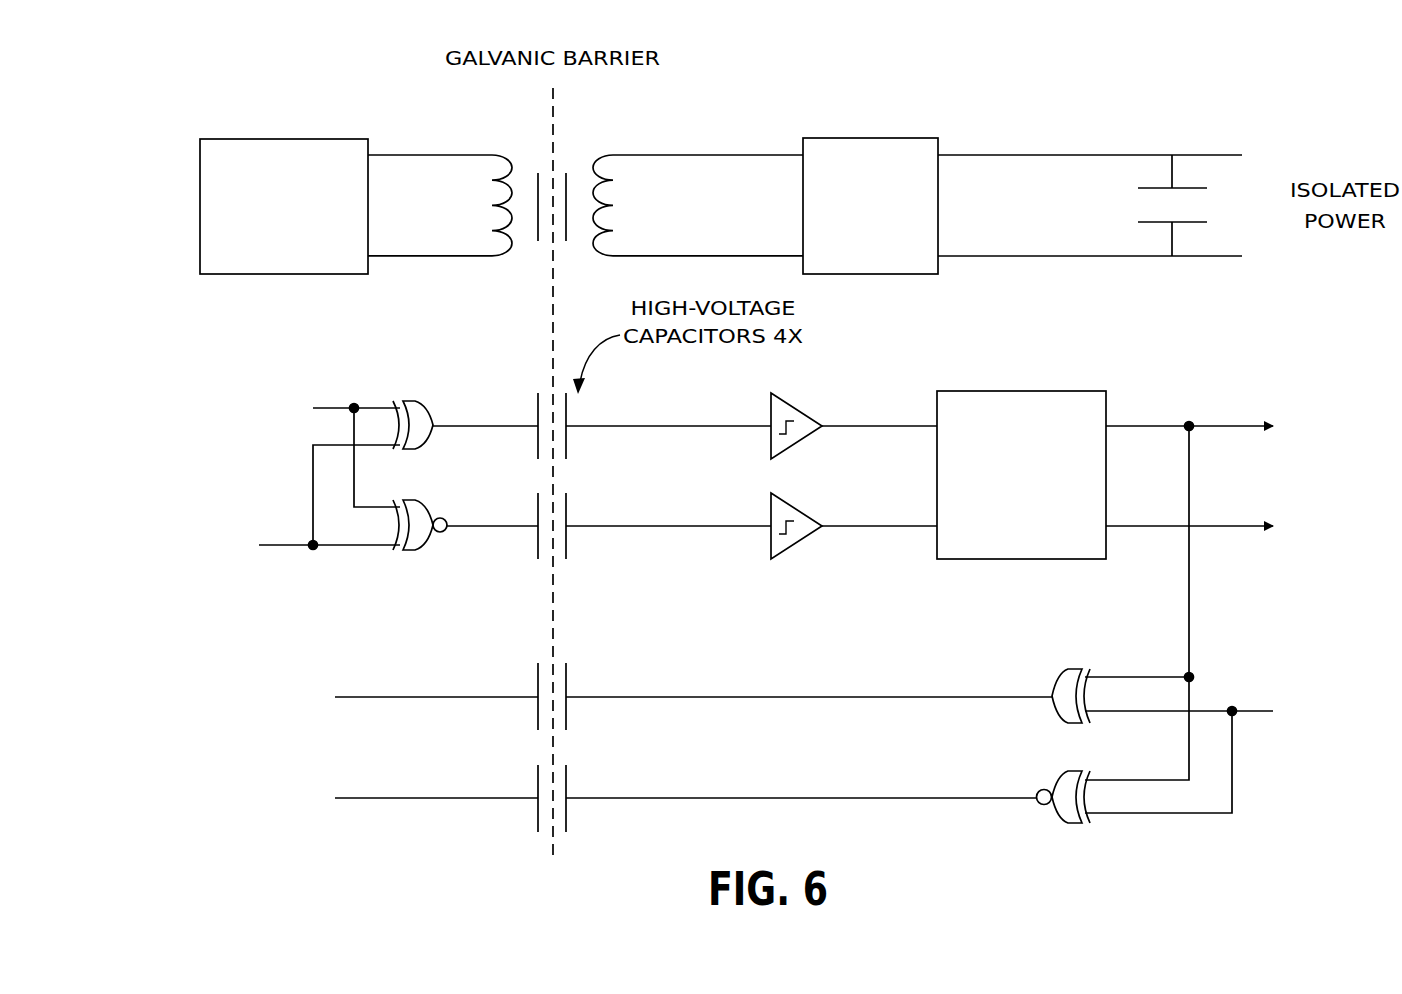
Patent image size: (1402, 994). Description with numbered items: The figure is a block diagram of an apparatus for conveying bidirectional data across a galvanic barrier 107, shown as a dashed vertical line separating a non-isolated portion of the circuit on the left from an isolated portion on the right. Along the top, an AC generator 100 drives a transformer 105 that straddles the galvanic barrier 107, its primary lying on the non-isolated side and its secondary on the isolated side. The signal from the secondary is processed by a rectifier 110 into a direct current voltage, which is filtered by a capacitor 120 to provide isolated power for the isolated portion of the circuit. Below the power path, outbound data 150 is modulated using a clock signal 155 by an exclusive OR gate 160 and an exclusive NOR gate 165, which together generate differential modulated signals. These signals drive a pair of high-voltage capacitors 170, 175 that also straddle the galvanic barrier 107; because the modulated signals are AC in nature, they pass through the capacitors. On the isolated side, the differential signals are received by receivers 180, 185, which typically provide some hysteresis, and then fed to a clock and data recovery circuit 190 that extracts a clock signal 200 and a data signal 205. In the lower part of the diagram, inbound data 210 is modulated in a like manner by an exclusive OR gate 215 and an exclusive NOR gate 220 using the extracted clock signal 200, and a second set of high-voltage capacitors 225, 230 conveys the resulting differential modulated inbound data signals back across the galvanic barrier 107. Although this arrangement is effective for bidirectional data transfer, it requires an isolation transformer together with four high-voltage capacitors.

The AC generator 100 is at (285, 137).
The transformer 105 is at (575, 158).
The galvanic barrier 107 is at (551, 97).
The rectifier 110 is at (868, 137).
The capacitor 120 is at (1186, 187).
The outbound data 150 is at (287, 549).
The clock signal 155 is at (334, 405).
The exclusive OR gate 160 is at (419, 400).
The exclusive NOR gate 165 is at (420, 553).
The high-voltage capacitor 170 is at (568, 450).
The high-voltage capacitor 175 is at (568, 550).
The receiver 180 is at (803, 440).
The receiver 185 is at (803, 540).
The clock and data recovery circuit 190 is at (1018, 390).
The clock signal 200 is at (1225, 423).
The data signal 205 is at (1228, 528).
The inbound data 210 is at (1254, 709).
The exclusive OR gate 215 is at (1069, 670).
The exclusive NOR gate 220 is at (1069, 824).
The high-voltage capacitor 225 is at (568, 721).
The high-voltage capacitor 230 is at (568, 823).